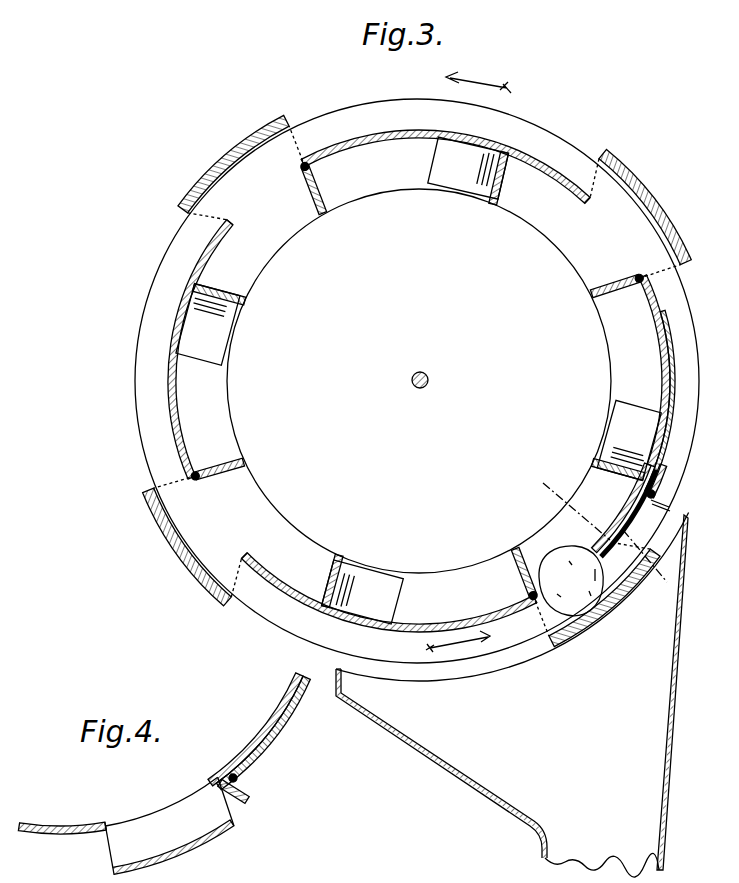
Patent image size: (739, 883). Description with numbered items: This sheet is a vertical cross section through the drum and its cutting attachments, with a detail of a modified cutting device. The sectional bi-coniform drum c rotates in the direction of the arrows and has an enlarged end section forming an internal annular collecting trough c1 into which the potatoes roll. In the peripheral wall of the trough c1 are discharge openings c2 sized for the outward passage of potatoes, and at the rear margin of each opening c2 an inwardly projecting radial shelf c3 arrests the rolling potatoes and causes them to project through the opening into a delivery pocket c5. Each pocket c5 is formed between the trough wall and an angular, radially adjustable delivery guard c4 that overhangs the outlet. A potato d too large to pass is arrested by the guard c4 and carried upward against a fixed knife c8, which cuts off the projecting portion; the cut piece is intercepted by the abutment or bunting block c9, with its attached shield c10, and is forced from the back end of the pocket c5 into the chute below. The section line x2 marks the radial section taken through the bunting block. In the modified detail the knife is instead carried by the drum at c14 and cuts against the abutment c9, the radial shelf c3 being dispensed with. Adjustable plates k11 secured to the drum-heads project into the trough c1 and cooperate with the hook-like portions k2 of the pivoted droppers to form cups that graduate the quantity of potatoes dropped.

In FIG. 3, the sectional bi-coniform drum c is at (419, 381).
In FIG. 4, the sectional bi-coniform drum c is at (160, 753).
In FIG. 3, the internal annular collecting trough c1 is at (433, 401).
In FIG. 3, the discharge opening c2 is at (424, 365).
In FIG. 3, the radial shelf c3 is at (417, 381).
In FIG. 3, the delivery guard c4 is at (419, 380).
In FIG. 4, the delivery guard c4 is at (170, 825).
In FIG. 3, the delivery pocket c5 is at (417, 381).
In FIG. 3, the knife c8 is at (624, 510).
In FIG. 3, the abutment or bunting block c9 is at (671, 487).
In FIG. 4, the abutment or bunting block c9 is at (252, 776).
In FIG. 3, the shield c10 is at (685, 401).
In FIG. 4, the shield c10 is at (270, 733).
In FIG. 4, the drum-carried knife c14 is at (90, 840).
In FIG. 3, the potato d is at (557, 565).
In FIG. 3, the hook-like portion of pivoted dropper k2 is at (418, 380).
In FIG. 3, the adjustable plate k11 is at (418, 380).
In FIG. 3, the section line X2 X2 x2 is at (601, 525).